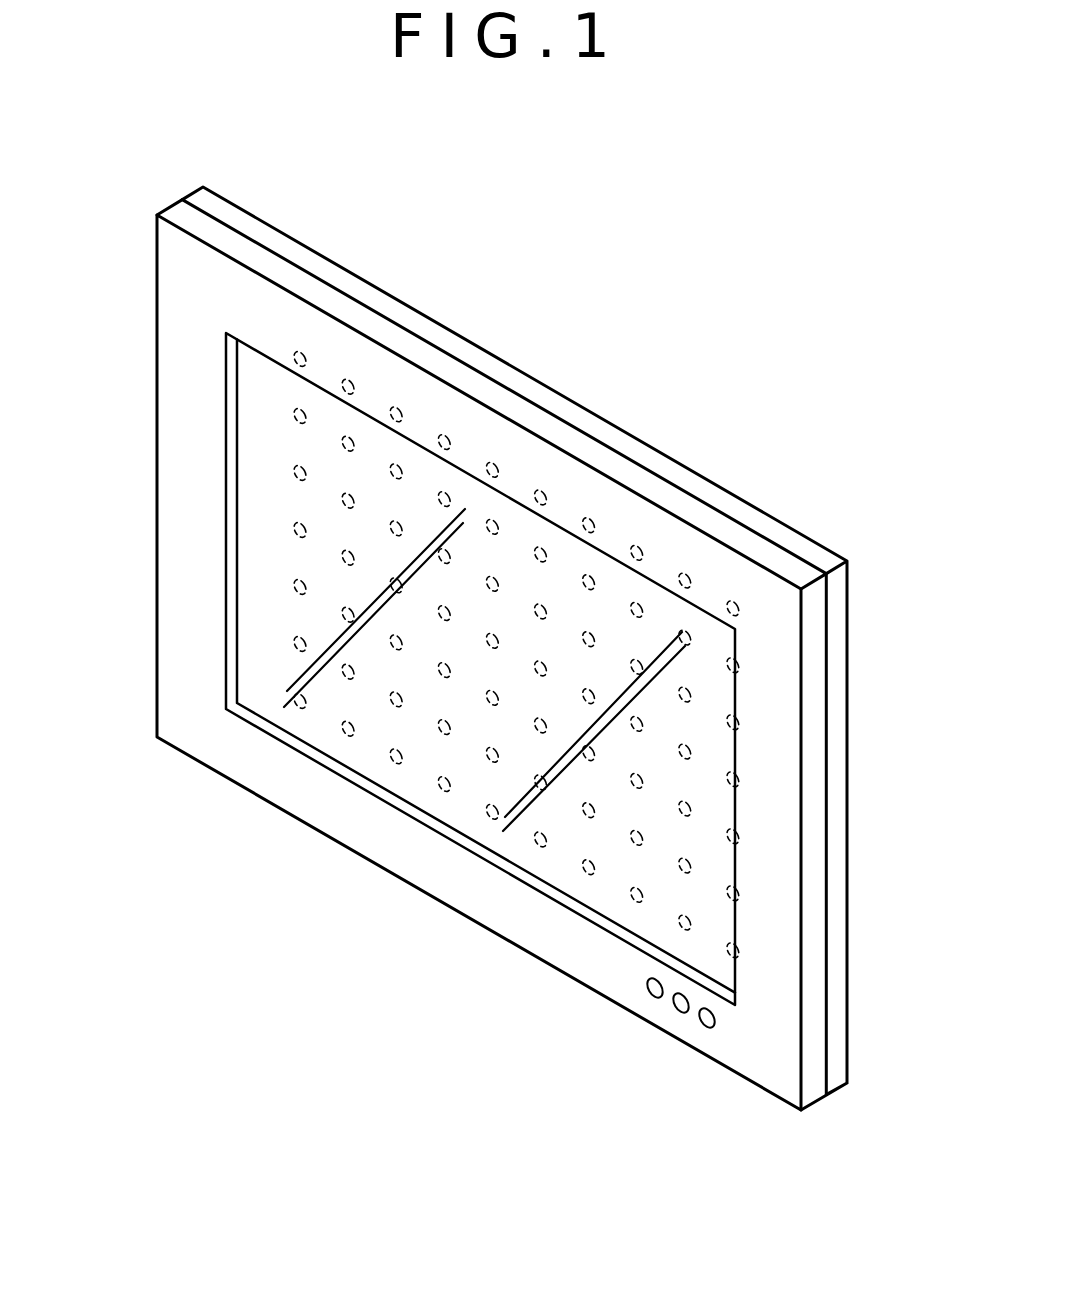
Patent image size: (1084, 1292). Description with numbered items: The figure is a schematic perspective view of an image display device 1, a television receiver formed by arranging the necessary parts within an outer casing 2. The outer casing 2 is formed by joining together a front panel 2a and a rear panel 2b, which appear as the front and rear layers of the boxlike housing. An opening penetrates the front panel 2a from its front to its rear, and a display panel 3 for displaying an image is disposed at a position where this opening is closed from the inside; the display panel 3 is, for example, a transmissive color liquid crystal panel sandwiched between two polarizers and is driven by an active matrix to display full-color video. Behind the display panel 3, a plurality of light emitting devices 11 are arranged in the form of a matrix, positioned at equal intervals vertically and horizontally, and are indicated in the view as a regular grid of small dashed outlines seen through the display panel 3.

The image display device 1 is at (674, 291).
The outer casing 2 is at (465, 378).
The front panel 2a is at (600, 457).
The rear panel 2b is at (693, 485).
The display panel 3 is at (257, 694).
The light emitting device 11 is at (293, 350).